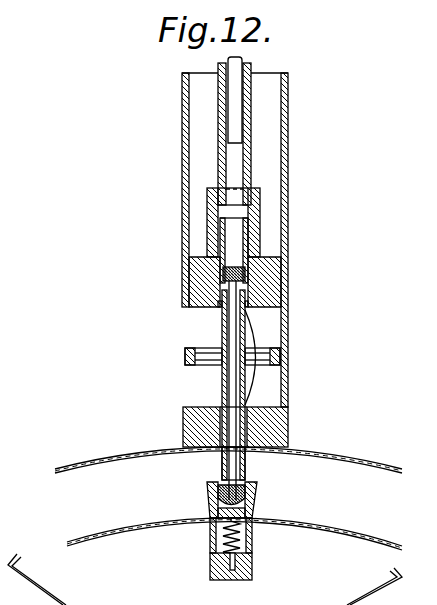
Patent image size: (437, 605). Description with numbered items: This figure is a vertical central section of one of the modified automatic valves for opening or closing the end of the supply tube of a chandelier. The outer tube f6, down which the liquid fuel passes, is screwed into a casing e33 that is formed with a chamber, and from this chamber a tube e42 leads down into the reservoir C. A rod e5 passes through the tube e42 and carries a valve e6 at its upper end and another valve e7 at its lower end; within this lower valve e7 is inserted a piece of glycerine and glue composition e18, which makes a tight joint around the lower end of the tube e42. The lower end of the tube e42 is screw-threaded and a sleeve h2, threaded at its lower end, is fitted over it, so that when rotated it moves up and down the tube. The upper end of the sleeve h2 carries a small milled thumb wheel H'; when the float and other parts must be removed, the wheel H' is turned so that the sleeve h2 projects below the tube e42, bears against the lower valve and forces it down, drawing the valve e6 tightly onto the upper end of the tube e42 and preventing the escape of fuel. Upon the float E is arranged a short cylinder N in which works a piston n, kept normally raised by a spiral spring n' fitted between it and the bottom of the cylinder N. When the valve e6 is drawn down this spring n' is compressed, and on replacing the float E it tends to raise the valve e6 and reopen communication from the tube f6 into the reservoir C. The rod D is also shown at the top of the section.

The rod D is at (243, 125).
The outer tube f6 is at (226, 127).
The casing e33 is at (256, 249).
The tube e42 is at (222, 328).
The valve e6 is at (223, 278).
The rod e5 is at (231, 383).
The thumb wheel H' is at (252, 354).
The sleeve h2 is at (222, 461).
The reservoir C is at (228, 454).
The float E is at (234, 540).
The valve e7 is at (248, 492).
The glycerine and glue composition e18 is at (220, 495).
The piston n is at (249, 510).
The spiral spring n' is at (248, 539).
The short cylinder N is at (212, 555).